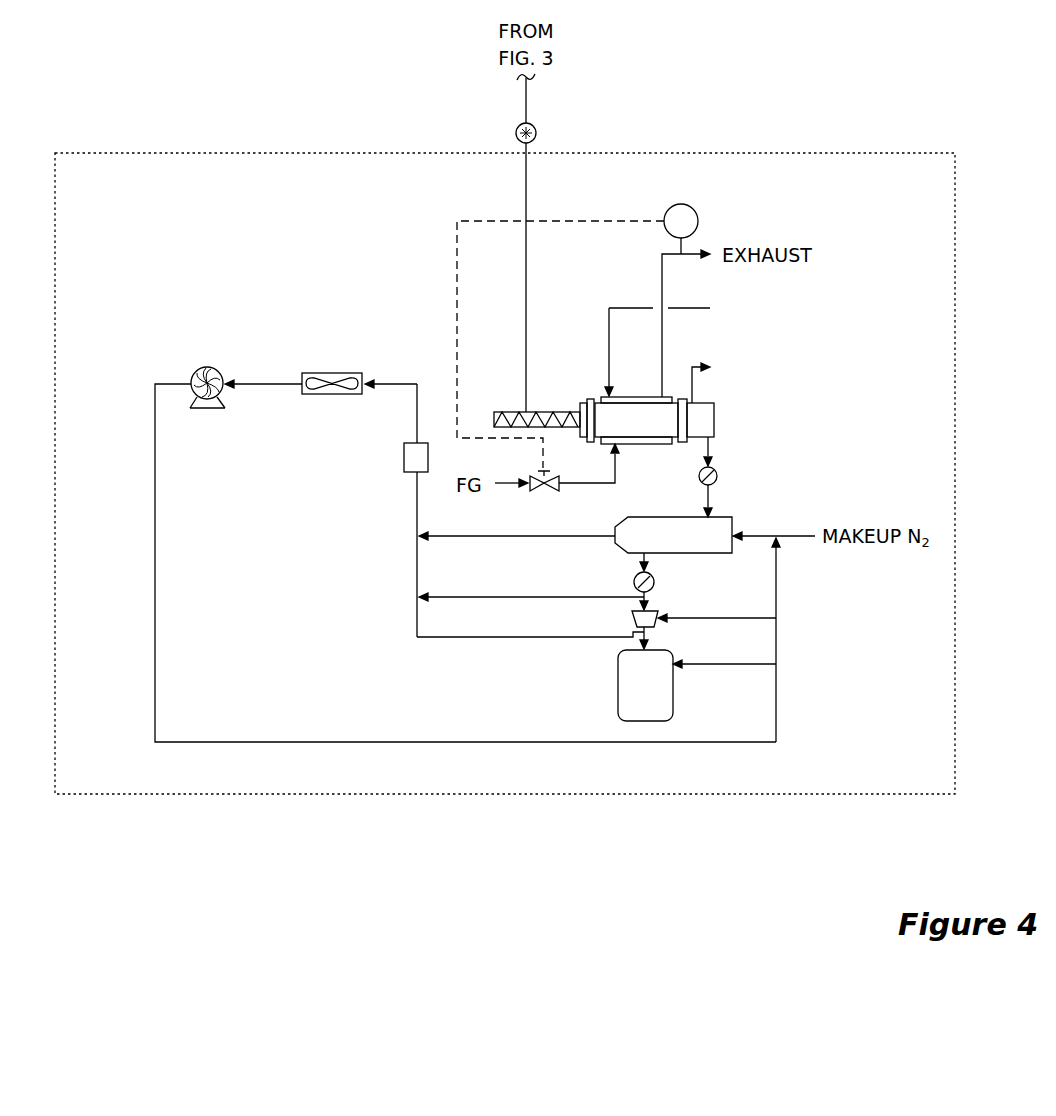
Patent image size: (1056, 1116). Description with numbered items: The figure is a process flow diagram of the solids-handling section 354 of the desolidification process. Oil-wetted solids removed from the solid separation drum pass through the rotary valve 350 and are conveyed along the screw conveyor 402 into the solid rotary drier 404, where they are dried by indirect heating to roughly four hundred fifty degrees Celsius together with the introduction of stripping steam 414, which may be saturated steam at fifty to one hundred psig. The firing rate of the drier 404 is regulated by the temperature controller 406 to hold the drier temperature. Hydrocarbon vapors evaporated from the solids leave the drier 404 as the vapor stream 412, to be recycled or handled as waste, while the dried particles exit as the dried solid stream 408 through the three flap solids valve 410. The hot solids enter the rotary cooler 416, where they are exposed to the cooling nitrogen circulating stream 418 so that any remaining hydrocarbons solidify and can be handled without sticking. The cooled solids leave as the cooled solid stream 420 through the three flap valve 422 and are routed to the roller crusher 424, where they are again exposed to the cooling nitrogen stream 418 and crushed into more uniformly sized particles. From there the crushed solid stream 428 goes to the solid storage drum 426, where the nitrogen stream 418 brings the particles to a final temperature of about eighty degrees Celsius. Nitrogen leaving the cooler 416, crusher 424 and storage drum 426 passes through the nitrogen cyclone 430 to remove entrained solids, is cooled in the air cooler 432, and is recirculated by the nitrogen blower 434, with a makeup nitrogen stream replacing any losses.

The rotary valve 350 is at (537, 133).
The solids-handling section 354 is at (830, 153).
The screw conveyor 402 is at (513, 411).
The solid rotary drier 404 is at (637, 445).
The temperature controller 406 is at (681, 204).
The dried solid stream 408 is at (710, 502).
The three flap solids valve 410 is at (718, 475).
The vapor stream 412 is at (690, 375).
The stripping steam 414 is at (620, 307).
The rotary cooler 416 is at (648, 514).
The cooling nitrogen circulating stream 418 is at (777, 577).
The cooled solid stream 420 is at (652, 597).
The three flap valve 422 is at (655, 585).
The roller crusher 424 is at (632, 617).
The solid storage drum 426 is at (617, 687).
The crushed solid stream 428 is at (650, 631).
The nitrogen cyclone 430 is at (403, 458).
The air cooler 432 is at (330, 373).
The nitrogen blower 434 is at (203, 367).